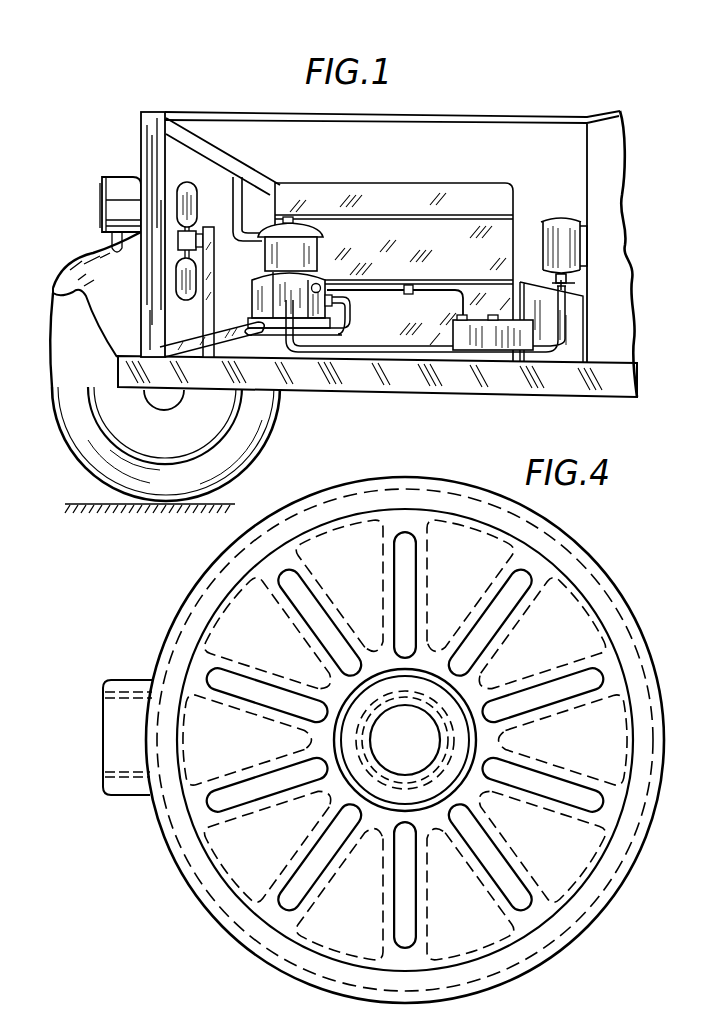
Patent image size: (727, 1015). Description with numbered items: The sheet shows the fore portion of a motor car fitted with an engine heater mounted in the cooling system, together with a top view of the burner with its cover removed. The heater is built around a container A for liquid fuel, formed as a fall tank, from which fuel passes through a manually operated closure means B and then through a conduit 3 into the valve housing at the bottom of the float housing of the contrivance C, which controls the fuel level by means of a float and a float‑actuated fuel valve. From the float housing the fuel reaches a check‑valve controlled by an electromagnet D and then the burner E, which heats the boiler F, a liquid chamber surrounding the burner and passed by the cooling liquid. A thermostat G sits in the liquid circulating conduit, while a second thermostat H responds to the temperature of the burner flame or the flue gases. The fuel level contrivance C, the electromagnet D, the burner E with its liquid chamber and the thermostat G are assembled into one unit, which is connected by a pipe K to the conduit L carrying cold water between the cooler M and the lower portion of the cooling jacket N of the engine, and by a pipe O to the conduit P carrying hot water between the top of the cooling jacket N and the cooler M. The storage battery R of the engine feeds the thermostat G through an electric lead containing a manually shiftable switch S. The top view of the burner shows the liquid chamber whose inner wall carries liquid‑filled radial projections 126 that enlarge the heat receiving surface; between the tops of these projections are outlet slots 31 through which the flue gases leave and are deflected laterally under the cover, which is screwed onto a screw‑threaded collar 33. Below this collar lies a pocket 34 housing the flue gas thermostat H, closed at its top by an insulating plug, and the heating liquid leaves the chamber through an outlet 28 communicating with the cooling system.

In FIG. 1, the cooler M is at (141, 133).
In FIG. 1, the conduit for the heat water P is at (222, 158).
In FIG. 1, the cooling jacket N is at (447, 195).
In FIG. 1, the thermostat H is at (316, 211).
In FIG. 1, the burner E is at (316, 211).
In FIG. 1, the boiler F is at (301, 248).
In FIG. 1, the contrivance to control the level of the fuel C is at (305, 291).
In FIG. 1, the electromagnet D is at (305, 300).
In FIG. 1, the thermostat G is at (361, 300).
In FIG. 1, the pipe O is at (237, 196).
In FIG. 1, the conduit for the cold water L is at (197, 340).
In FIG. 1, the pipe K is at (349, 324).
In FIG. 1, the conduit 3 is at (398, 352).
In FIG. 1, the manually shiftable switch S is at (410, 285).
In FIG. 1, the storage battery R is at (457, 325).
In FIG. 1, the container for liquid fuel A is at (543, 237).
In FIG. 1, the closure means B is at (567, 283).
In FIG. 4, the outlet slots 31 is at (587, 683).
In FIG. 4, the radial projections 126 is at (533, 642).
In FIG. 4, the pocket 34 is at (383, 752).
In FIG. 4, the screw-threaded collar 33 is at (448, 782).
In FIG. 4, the outlet 28 is at (119, 680).